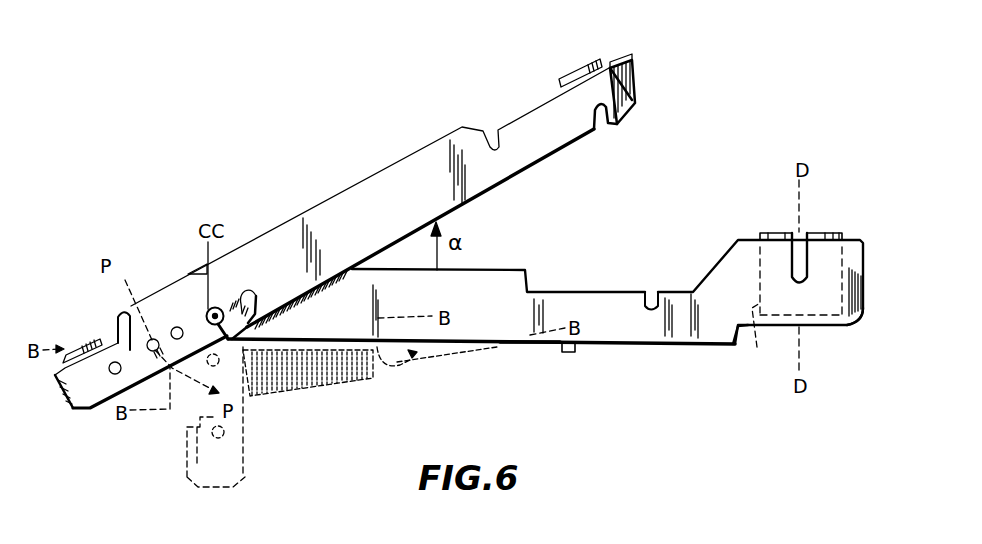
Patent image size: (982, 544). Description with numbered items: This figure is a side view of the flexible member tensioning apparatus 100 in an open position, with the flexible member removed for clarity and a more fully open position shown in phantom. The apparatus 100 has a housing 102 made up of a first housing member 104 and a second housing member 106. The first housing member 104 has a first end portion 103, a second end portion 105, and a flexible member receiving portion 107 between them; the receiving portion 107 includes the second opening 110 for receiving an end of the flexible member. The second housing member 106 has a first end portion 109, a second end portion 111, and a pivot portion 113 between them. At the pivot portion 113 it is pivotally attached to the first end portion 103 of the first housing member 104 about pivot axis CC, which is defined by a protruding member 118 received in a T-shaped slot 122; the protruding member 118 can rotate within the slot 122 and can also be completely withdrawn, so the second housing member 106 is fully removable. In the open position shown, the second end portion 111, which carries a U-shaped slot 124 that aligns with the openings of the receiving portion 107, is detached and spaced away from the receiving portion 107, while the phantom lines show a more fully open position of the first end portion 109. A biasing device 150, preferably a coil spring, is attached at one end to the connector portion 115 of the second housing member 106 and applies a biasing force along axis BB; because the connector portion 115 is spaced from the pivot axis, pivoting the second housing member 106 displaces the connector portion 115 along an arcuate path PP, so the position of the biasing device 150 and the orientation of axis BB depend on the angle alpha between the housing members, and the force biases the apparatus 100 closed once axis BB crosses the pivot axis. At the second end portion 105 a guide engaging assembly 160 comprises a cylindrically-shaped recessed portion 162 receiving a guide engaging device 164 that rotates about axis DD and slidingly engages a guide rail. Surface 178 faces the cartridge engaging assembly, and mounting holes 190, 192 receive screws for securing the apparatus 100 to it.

The flexible member tensioning apparatus 100 is at (180, 235).
The housing 102 is at (587, 227).
The first end portion 103 is at (260, 323).
The first housing member 104 is at (712, 340).
The second end portion 105 is at (847, 327).
The second housing member 106 is at (441, 147).
The flexible member receiving portion 107 is at (640, 335).
The first end portion 109 is at (76, 406).
The second opening 110 is at (652, 293).
The second end portion 111 is at (628, 88).
The pivot portion 113 is at (247, 252).
The connector portion 115 is at (120, 318).
The protruding member 118 is at (206, 310).
The T-shaped slot 122 is at (246, 291).
The U-shaped slot 124 is at (612, 124).
The biasing device 150 is at (297, 398).
The guide engaging assembly 160 is at (848, 250).
The recessed portion 162 is at (766, 337).
The guide engaging device 164 is at (823, 233).
The surface 178 is at (527, 347).
The mounting hole 190 is at (580, 65).
The mounting hole 192 is at (86, 343).